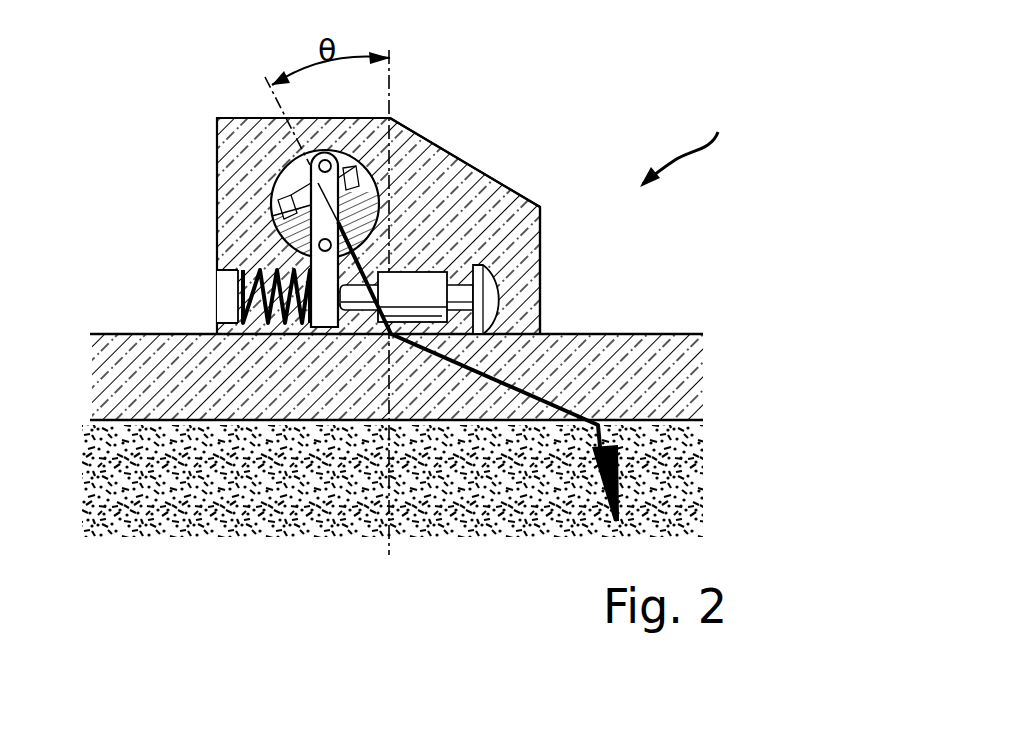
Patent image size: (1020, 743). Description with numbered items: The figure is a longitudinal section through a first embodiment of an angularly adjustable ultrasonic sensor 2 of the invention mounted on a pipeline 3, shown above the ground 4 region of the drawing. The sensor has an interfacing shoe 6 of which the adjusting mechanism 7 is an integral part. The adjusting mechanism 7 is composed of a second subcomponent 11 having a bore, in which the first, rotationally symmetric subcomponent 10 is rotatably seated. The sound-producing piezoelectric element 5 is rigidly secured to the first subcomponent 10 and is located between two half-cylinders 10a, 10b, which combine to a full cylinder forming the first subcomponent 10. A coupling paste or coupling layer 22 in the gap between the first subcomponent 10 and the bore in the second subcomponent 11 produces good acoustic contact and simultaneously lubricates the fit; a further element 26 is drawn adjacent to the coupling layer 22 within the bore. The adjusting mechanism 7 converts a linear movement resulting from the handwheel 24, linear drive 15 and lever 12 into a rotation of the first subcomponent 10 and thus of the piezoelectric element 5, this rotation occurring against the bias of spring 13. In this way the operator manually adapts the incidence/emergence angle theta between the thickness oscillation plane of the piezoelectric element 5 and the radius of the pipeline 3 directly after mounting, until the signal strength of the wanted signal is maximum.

The ultrasonic sensor 2 is at (483, 160).
The pipeline 3 is at (592, 358).
The soil 4 is at (458, 502).
The piezoelectric element 5 is at (292, 192).
The interfacing shoe 6 is at (487, 218).
The adjusting mechanism 7 is at (685, 143).
The first subcomponent 10 is at (259, 158).
The half-cylinder 10a is at (300, 158).
The half-cylinder 10b is at (393, 205).
The second subcomponent 11 is at (445, 180).
The lever 12 is at (338, 152).
The spring 13 is at (262, 271).
The linear drive 15 is at (427, 303).
The coupling layer 22 is at (280, 202).
The handwheel 24 is at (484, 290).
The catch 26 is at (277, 227).